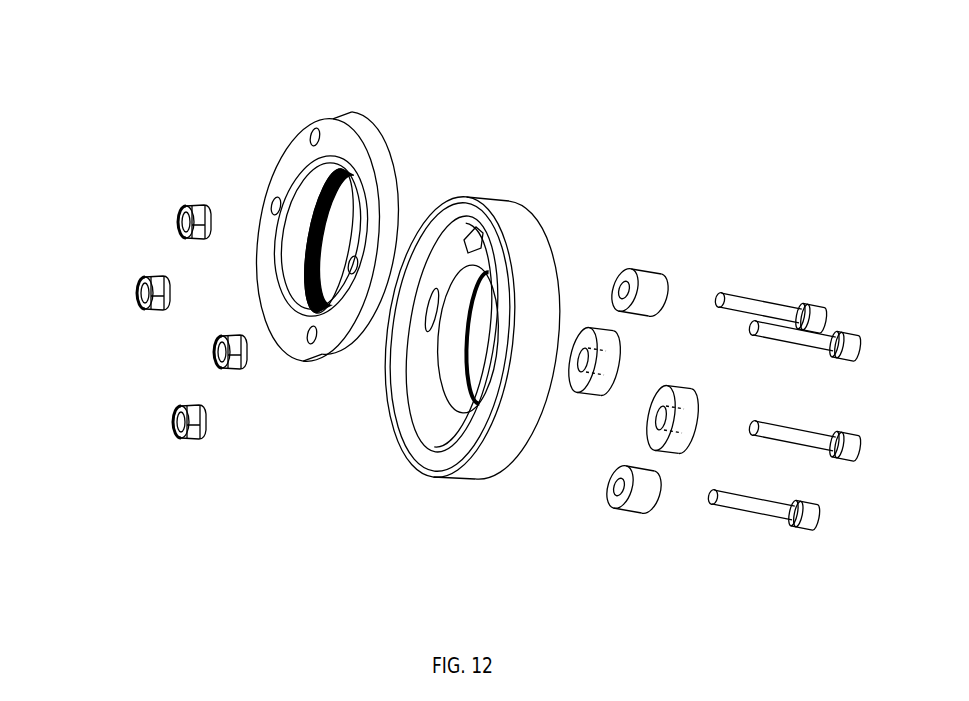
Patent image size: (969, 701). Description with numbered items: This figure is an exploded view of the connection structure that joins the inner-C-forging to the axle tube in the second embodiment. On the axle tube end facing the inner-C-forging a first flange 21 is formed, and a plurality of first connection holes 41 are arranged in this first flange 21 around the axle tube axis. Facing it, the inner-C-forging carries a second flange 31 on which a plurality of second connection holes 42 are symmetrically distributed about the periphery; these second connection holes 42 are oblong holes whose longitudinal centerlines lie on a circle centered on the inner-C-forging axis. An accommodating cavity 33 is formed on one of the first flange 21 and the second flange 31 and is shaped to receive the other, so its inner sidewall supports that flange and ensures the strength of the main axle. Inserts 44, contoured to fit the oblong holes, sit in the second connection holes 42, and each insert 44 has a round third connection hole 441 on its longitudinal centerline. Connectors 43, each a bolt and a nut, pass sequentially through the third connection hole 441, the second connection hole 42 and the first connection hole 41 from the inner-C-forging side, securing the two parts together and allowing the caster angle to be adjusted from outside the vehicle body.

The first flange 21 is at (512, 217).
The second flange 31 is at (366, 128).
The accommodating cavity 33 is at (407, 397).
The first connection holes 41 is at (478, 228).
The second connection holes 42 is at (314, 128).
The connectors 43 is at (147, 278).
The inserts 44 is at (652, 282).
The third connection hole 441 is at (616, 490).